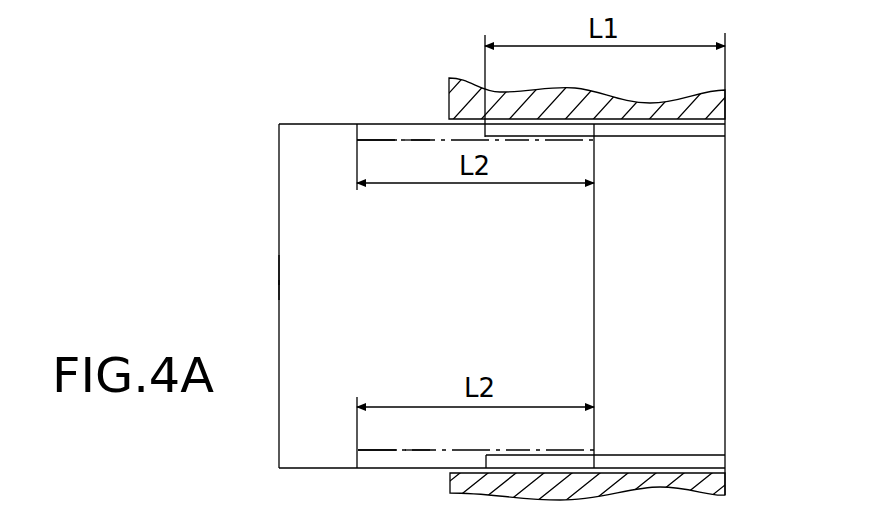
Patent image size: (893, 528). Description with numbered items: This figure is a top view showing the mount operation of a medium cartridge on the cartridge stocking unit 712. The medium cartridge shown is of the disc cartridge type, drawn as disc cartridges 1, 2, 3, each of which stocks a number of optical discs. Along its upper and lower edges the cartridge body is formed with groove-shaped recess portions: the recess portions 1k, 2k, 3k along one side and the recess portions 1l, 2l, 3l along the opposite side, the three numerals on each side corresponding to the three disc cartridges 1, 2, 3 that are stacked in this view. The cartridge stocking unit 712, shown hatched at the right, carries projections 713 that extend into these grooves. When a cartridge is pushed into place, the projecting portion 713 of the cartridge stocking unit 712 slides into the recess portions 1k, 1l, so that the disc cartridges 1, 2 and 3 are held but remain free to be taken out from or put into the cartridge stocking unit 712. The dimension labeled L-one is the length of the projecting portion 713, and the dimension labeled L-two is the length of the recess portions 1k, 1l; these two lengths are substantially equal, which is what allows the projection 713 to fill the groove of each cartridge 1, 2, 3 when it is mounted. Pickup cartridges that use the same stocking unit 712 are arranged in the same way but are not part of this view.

The disc cartridge 1 is at (279, 263).
The disc cartridge 2 is at (279, 273).
The disc cartridge 3 is at (279, 288).
The groove-shaped recess portion 1k is at (433, 141).
The groove-shaped recess portion 2k is at (420, 142).
The groove-shaped recess portion 3k is at (398, 140).
The groove-shaped recess portion 1l is at (442, 450).
The groove-shaped recess portion 2l is at (423, 450).
The groove-shaped recess portion 3l is at (390, 451).
The cartridge stocking unit 712 is at (713, 110).
The projection 713 is at (647, 137).